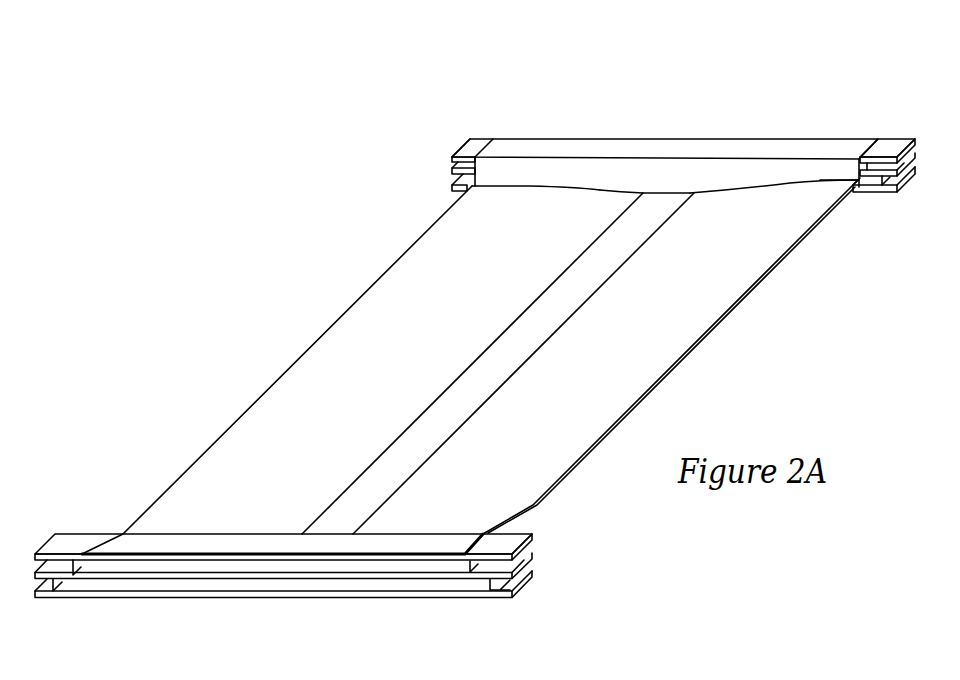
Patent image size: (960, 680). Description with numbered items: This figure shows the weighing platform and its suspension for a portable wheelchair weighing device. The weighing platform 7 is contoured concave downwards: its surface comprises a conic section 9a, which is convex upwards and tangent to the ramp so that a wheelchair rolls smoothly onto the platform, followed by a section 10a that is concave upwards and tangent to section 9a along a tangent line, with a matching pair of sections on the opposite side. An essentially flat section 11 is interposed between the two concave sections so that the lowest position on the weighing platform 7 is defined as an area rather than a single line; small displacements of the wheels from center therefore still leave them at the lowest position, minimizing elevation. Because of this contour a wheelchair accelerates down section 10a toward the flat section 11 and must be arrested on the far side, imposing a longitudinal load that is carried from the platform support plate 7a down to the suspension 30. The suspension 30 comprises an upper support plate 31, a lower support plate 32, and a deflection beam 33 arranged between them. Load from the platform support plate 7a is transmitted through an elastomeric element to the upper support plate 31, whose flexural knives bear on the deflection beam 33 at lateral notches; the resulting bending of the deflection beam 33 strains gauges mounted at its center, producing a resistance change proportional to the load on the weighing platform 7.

The weighing platform 7 is at (329, 413).
The platform support plate 7a is at (730, 148).
The conic section 9a is at (515, 186).
The concave section 10a is at (584, 190).
The flat section 11 is at (657, 193).
The suspension 30 is at (543, 535).
The upper support plate 31 is at (892, 143).
The lower support plate 32 is at (869, 193).
The deflection beam 33 is at (452, 174).